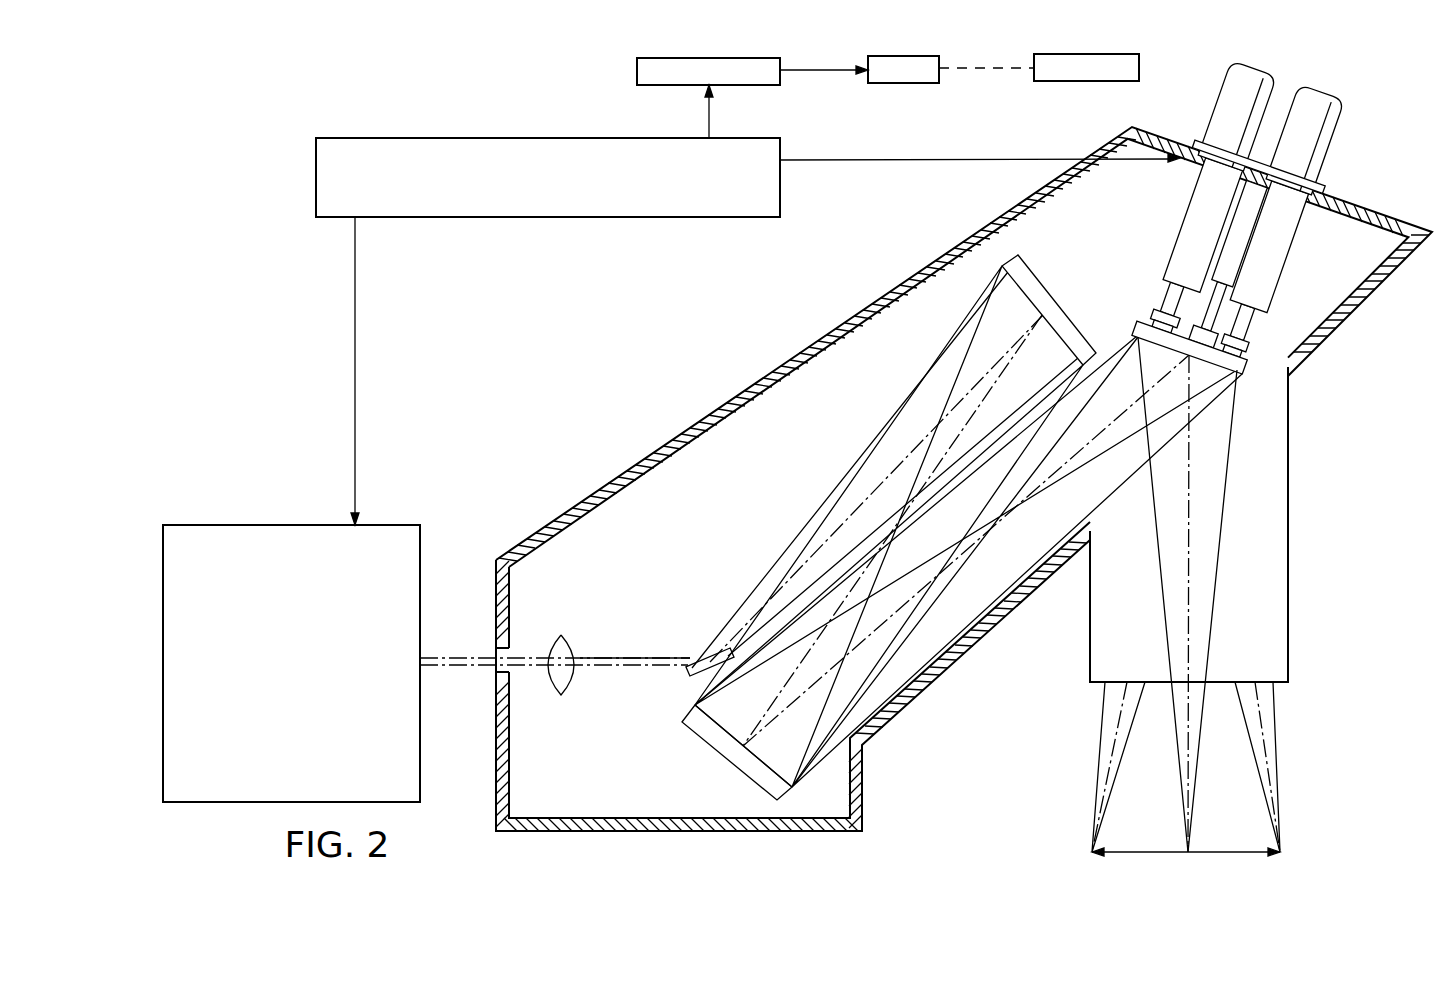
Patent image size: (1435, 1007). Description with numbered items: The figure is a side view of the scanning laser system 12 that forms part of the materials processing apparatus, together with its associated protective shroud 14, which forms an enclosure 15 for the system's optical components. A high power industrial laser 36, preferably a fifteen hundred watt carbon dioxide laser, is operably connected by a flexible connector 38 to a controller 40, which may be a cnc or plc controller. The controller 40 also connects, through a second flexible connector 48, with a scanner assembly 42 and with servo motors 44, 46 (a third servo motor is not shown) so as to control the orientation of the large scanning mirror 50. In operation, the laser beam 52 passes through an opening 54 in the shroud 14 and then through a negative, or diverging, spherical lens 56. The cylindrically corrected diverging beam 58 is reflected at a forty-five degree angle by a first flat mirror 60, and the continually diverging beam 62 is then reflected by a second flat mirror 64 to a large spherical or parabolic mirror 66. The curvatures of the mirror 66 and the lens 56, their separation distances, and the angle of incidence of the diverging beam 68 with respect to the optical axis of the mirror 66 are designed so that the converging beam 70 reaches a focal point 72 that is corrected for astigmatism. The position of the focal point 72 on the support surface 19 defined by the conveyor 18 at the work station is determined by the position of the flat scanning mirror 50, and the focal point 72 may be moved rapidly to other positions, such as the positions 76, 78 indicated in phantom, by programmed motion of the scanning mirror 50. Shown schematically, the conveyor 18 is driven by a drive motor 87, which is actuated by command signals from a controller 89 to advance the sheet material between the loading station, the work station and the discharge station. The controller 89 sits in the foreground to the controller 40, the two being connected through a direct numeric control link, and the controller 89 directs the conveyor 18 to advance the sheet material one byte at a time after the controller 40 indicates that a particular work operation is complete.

The scanning laser system 12 is at (964, 463).
The protective shroud 14 is at (741, 390).
The enclosure 15 is at (1046, 648).
The conveyor 18 is at (1090, 54).
The support surface 19 is at (1145, 857).
The high power industrial laser 36 is at (284, 523).
The flexible connector 38 is at (357, 347).
The controller 40 is at (593, 137).
The scanner assembly 42 is at (1244, 219).
The servo motor 44 is at (1217, 107).
The servo motor 46 is at (1348, 114).
The second flexible connector 48 is at (860, 160).
The large scanning mirror 50 is at (1245, 362).
The laser beam 52 is at (482, 668).
The opening 54 is at (500, 675).
The negative spherical lens 56 is at (565, 635).
The cylindrically corrected diverging beam 58 is at (648, 655).
The first flat mirror 60 is at (693, 678).
The continually diverging beam 62 is at (851, 475).
The second flat mirror 64 is at (1058, 313).
The large spherical or parabolic mirror 66 is at (748, 765).
The diverging beam 68 is at (713, 745).
The converging beam 70 is at (1223, 527).
The focal point 72 is at (1190, 847).
The focal point position 76 is at (1093, 827).
The focal point position 78 is at (1285, 833).
The drive motor 87 is at (905, 57).
The controller 89 is at (718, 57).